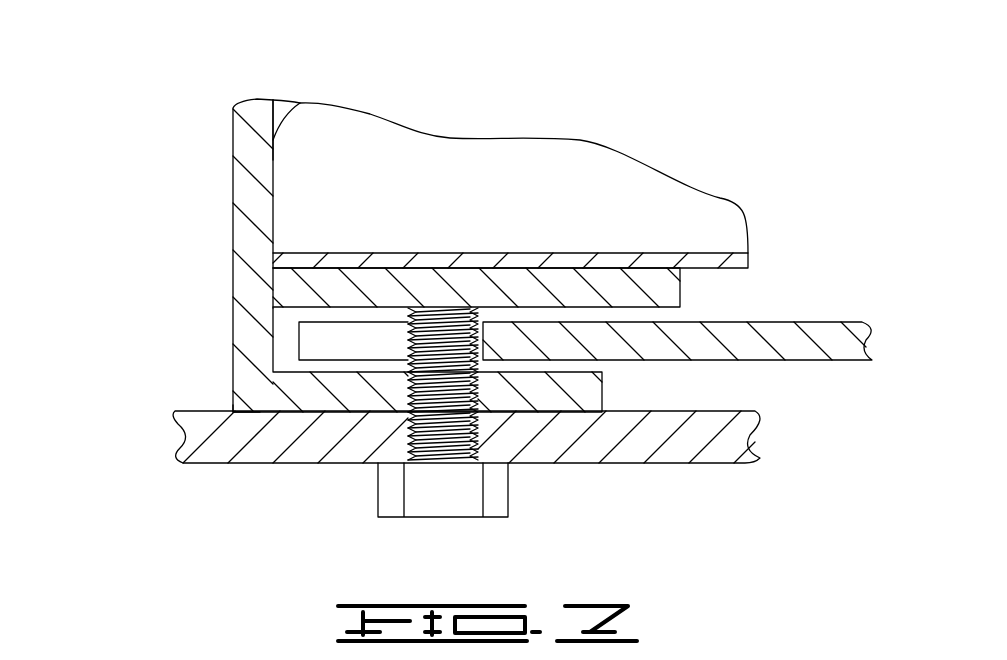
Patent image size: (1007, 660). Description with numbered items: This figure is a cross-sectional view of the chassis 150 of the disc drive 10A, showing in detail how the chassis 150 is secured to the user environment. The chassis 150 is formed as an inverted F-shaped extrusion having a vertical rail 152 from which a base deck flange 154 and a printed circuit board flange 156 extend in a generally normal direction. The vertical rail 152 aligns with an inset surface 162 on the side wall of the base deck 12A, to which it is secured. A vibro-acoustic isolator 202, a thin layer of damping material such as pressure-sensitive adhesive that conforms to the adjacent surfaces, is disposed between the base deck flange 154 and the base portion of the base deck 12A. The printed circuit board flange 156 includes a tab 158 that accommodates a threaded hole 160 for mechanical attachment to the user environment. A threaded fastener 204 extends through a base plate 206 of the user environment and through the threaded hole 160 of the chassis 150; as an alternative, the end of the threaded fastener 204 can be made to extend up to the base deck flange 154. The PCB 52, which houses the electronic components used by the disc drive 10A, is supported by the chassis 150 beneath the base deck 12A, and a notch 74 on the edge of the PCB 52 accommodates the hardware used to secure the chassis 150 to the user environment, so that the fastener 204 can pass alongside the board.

The disc drive 10A is at (232, 100).
The base deck 12A is at (490, 150).
The PCB 52 is at (803, 342).
The notches 74 is at (392, 346).
The chassis 150 is at (232, 272).
The vertical rail 152 is at (250, 165).
The base deck flange 154 is at (610, 282).
The printed circuit board flange 156 is at (243, 455).
The tabs 158 is at (585, 400).
The threaded hole 160 is at (480, 392).
The inset surface 162 is at (273, 140).
The vibro-acoustic isolator 202 is at (628, 262).
The threaded fastener 204 is at (437, 497).
The base plate 206 is at (200, 444).